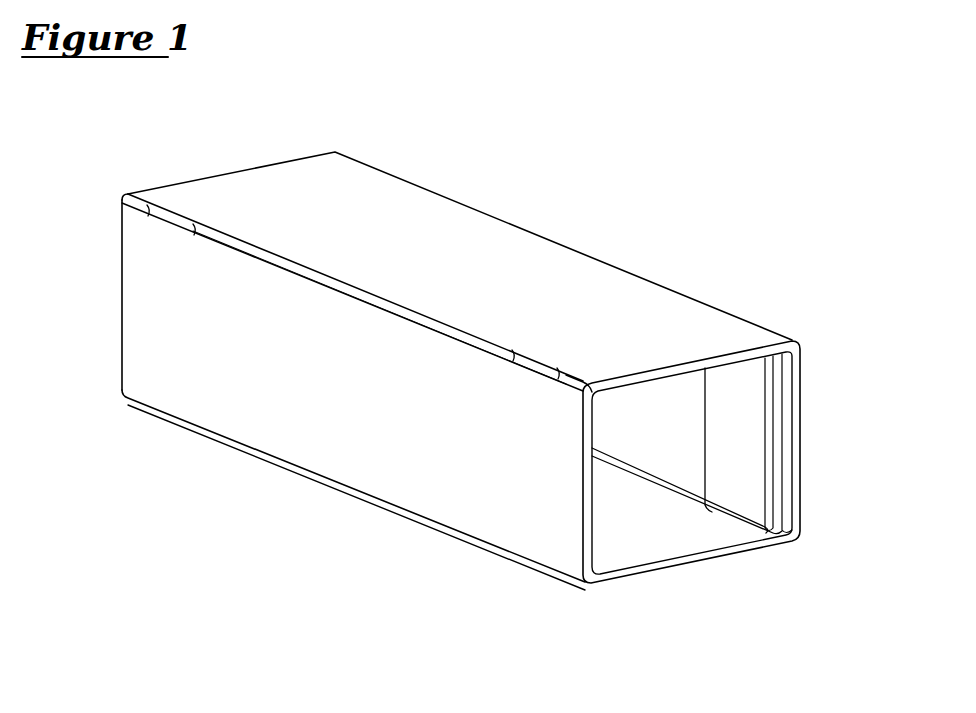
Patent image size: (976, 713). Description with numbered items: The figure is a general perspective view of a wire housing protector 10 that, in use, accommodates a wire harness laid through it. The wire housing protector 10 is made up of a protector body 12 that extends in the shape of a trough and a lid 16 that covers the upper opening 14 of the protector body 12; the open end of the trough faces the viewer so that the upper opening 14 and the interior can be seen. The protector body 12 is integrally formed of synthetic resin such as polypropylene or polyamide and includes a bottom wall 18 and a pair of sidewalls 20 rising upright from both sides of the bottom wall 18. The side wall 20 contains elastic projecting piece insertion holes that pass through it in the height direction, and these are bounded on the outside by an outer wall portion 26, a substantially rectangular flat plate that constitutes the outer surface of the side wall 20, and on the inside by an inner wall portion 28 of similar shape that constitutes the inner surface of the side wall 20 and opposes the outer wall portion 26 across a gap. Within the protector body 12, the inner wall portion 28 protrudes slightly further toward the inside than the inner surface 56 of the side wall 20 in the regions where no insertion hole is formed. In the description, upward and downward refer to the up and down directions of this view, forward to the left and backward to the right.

The wire housing protector 10 is at (460, 198).
The protector body 12 is at (441, 558).
The upper opening 14 is at (593, 402).
The lid 16 is at (537, 193).
The bottom wall 18 is at (657, 543).
The side wall 20 is at (403, 412).
The outer wall portion 26 is at (165, 278).
The inner wall portion 28 is at (740, 450).
The inner surface 56 is at (663, 393).